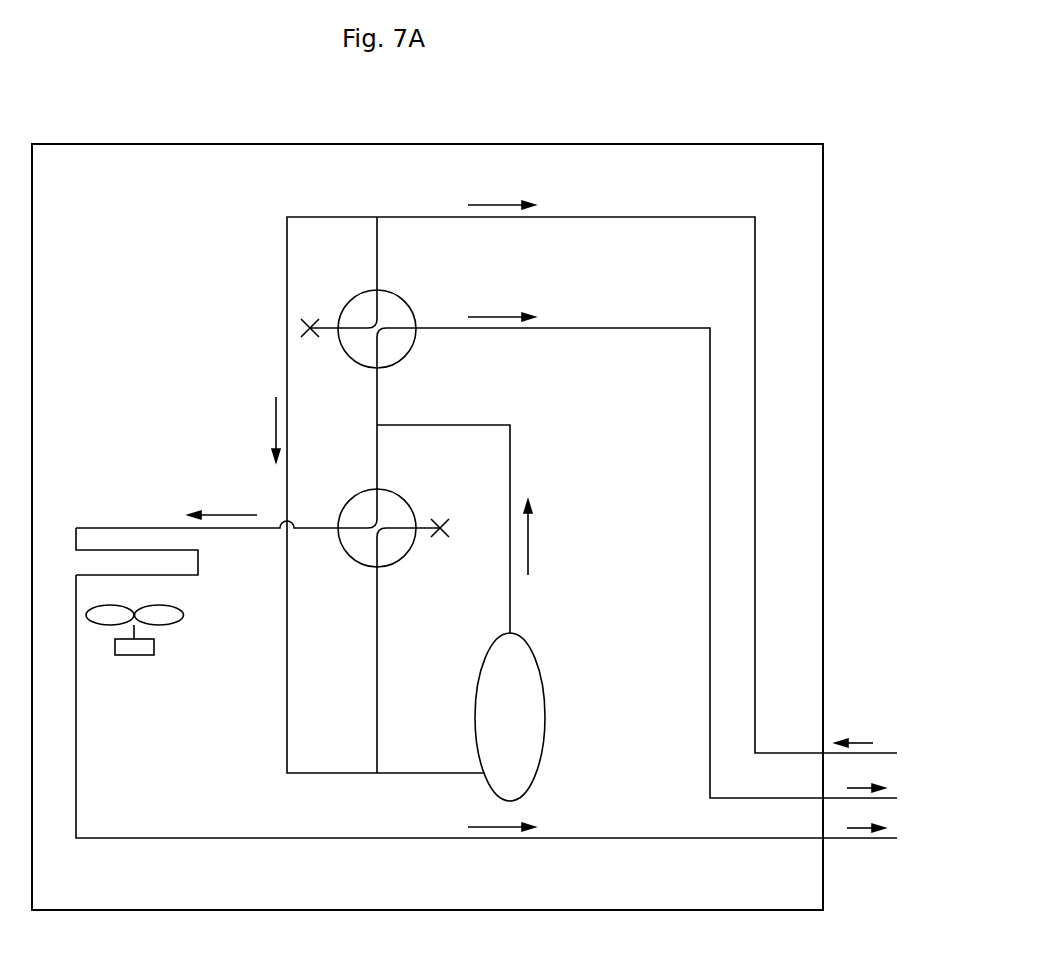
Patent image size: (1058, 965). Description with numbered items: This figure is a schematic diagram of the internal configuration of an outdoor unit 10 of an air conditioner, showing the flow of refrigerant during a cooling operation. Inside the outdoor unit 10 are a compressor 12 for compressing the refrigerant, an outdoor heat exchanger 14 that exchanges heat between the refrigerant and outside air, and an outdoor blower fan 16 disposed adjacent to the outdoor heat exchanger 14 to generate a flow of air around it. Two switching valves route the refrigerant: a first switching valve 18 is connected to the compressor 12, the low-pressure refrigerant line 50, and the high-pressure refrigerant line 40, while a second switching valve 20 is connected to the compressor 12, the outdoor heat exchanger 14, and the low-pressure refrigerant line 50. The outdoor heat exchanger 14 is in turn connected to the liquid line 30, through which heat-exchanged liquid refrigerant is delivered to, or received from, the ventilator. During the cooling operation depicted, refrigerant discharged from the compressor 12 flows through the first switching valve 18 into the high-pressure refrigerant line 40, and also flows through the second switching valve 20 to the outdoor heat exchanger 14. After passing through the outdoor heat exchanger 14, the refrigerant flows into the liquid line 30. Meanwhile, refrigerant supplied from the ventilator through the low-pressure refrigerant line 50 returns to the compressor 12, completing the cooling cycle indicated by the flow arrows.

The outdoor unit 10 is at (676, 143).
The compressor 12 is at (541, 668).
The outdoor heat exchanger 14 is at (137, 550).
The outdoor blower fan 16 is at (160, 615).
The first switching valve 18 is at (407, 301).
The second switching valve 20 is at (407, 501).
The liquid line 30 is at (885, 837).
The high-pressure refrigerant line 40 is at (885, 797).
The low-pressure refrigerant line 50 is at (885, 752).